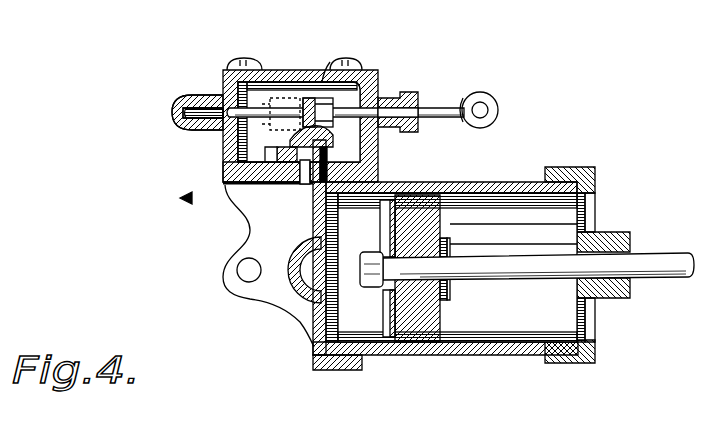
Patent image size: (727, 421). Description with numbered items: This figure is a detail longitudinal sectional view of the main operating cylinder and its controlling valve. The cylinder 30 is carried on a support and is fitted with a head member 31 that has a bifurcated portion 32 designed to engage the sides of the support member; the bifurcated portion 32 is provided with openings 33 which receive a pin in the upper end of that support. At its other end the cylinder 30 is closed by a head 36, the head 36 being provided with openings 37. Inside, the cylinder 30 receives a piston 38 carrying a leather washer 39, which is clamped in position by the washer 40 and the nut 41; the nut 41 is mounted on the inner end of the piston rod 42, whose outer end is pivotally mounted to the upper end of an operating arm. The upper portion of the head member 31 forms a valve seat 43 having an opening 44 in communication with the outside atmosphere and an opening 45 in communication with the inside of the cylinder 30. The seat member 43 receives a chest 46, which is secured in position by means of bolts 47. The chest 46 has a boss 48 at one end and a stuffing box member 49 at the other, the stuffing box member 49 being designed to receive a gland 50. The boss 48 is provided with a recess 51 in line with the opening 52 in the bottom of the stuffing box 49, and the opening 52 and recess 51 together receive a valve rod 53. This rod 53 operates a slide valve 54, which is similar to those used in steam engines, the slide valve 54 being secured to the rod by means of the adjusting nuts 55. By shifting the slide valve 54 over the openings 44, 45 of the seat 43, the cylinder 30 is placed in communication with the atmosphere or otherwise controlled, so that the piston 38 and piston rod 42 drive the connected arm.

The cylinder 30 is at (540, 228).
The head member 31 is at (318, 322).
The bifurcated portion 32 is at (268, 266).
The openings 33 is at (240, 280).
The head 36 is at (580, 168).
The openings 37 is at (602, 203).
The piston 38 is at (435, 308).
The leather washer 39 is at (385, 323).
The washer 40 is at (390, 233).
The nut 41 is at (373, 258).
The piston rod 42 is at (538, 266).
The valve seat 43 is at (223, 183).
The opening 44 is at (300, 184).
The opening 45 is at (310, 188).
The chest 46 is at (308, 105).
The bolts 47 is at (230, 86).
The boss 48 is at (178, 120).
The stuffing box member 49 is at (410, 96).
The gland 50 is at (420, 110).
The recess 51 is at (205, 124).
The opening 52 is at (330, 96).
The valve rod 53 is at (267, 100).
The slide valve 54 is at (292, 138).
The adjusting nuts 55 is at (322, 80).